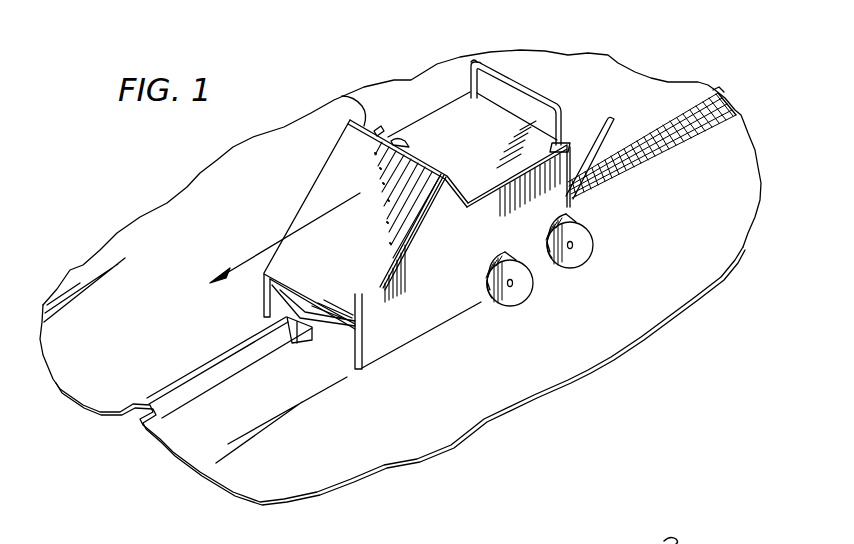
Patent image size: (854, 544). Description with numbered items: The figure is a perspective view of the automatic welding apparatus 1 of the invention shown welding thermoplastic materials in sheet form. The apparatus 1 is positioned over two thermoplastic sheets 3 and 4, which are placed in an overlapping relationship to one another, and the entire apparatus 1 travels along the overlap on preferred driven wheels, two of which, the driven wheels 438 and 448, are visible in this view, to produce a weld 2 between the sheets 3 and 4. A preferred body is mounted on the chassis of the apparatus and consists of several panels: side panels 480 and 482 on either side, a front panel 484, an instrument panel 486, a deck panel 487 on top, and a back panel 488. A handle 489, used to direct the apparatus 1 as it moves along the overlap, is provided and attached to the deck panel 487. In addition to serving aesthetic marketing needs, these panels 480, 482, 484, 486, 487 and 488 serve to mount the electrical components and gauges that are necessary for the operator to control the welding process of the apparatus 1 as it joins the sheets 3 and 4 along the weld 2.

The automatic welding apparatus 1 is at (468, 192).
The weld 2 is at (688, 122).
The thermoplastic sheet 3 is at (100, 367).
The thermoplastic sheet 4 is at (250, 465).
The driven wheel 438 is at (503, 298).
The driven wheel 448 is at (565, 263).
The side panel 480 is at (447, 302).
The side panel 482 is at (322, 163).
The front panel 484 is at (318, 195).
The instrument panel 486 is at (362, 127).
The deck panel 487 is at (443, 117).
The back panel 488 is at (580, 148).
The handle 489 is at (530, 90).